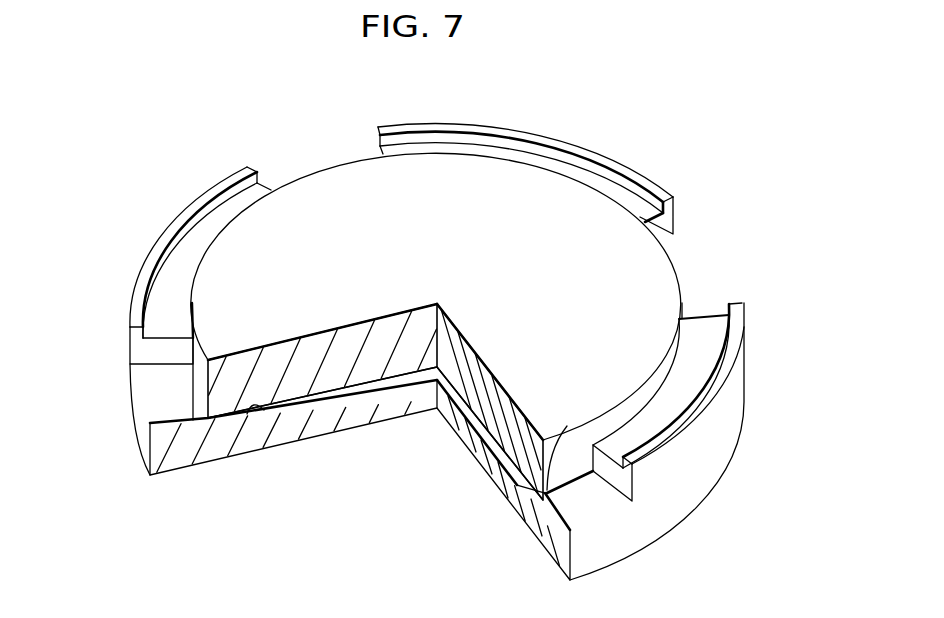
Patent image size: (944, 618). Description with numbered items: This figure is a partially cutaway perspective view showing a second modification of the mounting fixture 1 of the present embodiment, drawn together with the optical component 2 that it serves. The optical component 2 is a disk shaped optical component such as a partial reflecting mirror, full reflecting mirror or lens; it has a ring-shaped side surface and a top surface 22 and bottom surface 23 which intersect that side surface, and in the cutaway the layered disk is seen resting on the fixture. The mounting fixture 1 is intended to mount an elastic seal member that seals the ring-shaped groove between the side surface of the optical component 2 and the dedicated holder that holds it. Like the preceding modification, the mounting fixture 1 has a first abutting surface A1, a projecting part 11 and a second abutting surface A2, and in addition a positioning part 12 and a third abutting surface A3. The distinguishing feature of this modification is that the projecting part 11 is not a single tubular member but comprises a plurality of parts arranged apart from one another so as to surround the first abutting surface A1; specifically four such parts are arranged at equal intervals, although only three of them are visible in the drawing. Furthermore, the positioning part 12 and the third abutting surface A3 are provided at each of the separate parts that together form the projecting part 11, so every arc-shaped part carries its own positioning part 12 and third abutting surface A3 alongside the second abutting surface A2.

The mounting fixture 1 is at (165, 200).
The optical component 2 is at (477, 186).
The projecting part 11 is at (660, 227).
The positioning part 12 is at (667, 207).
The top surface 22 is at (323, 395).
The bottom surface 23 is at (343, 325).
The first abutting surface A1 is at (263, 421).
The second abutting surface A2 is at (600, 183).
The third abutting surface A3 is at (653, 185).